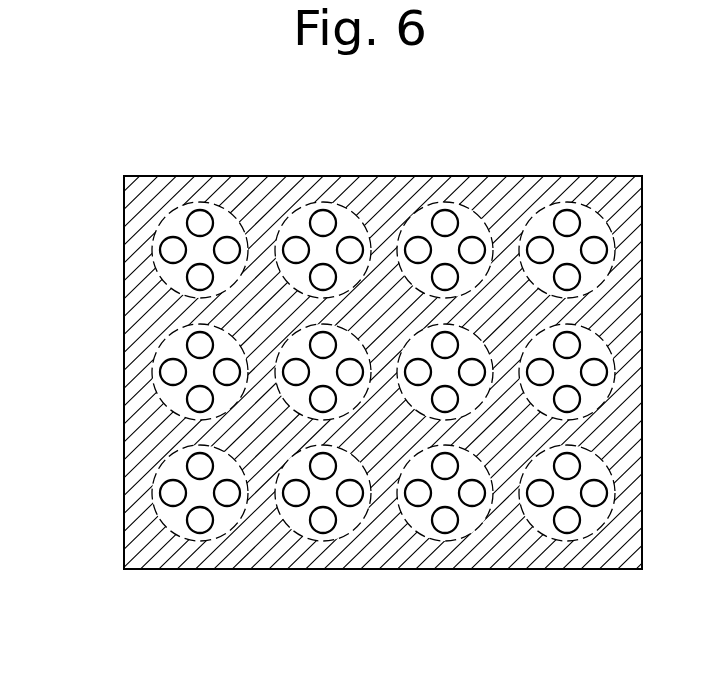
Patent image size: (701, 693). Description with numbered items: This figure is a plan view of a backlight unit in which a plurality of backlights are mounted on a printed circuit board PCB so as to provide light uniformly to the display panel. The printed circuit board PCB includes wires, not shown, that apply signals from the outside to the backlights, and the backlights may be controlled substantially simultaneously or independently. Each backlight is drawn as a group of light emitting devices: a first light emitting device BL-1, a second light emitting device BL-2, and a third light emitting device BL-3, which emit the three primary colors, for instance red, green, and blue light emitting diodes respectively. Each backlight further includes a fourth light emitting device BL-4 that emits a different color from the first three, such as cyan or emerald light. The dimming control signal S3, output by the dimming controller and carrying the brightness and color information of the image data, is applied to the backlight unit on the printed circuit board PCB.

The first light emitting device BL-1 is at (171, 252).
The second light emitting device BL-2 is at (198, 224).
The third light emitting device BL-3 is at (227, 248).
The fourth light emitting device BL-4 is at (199, 278).
The dimming control signal S3 is at (124, 374).
The printed circuit board PCB is at (508, 552).